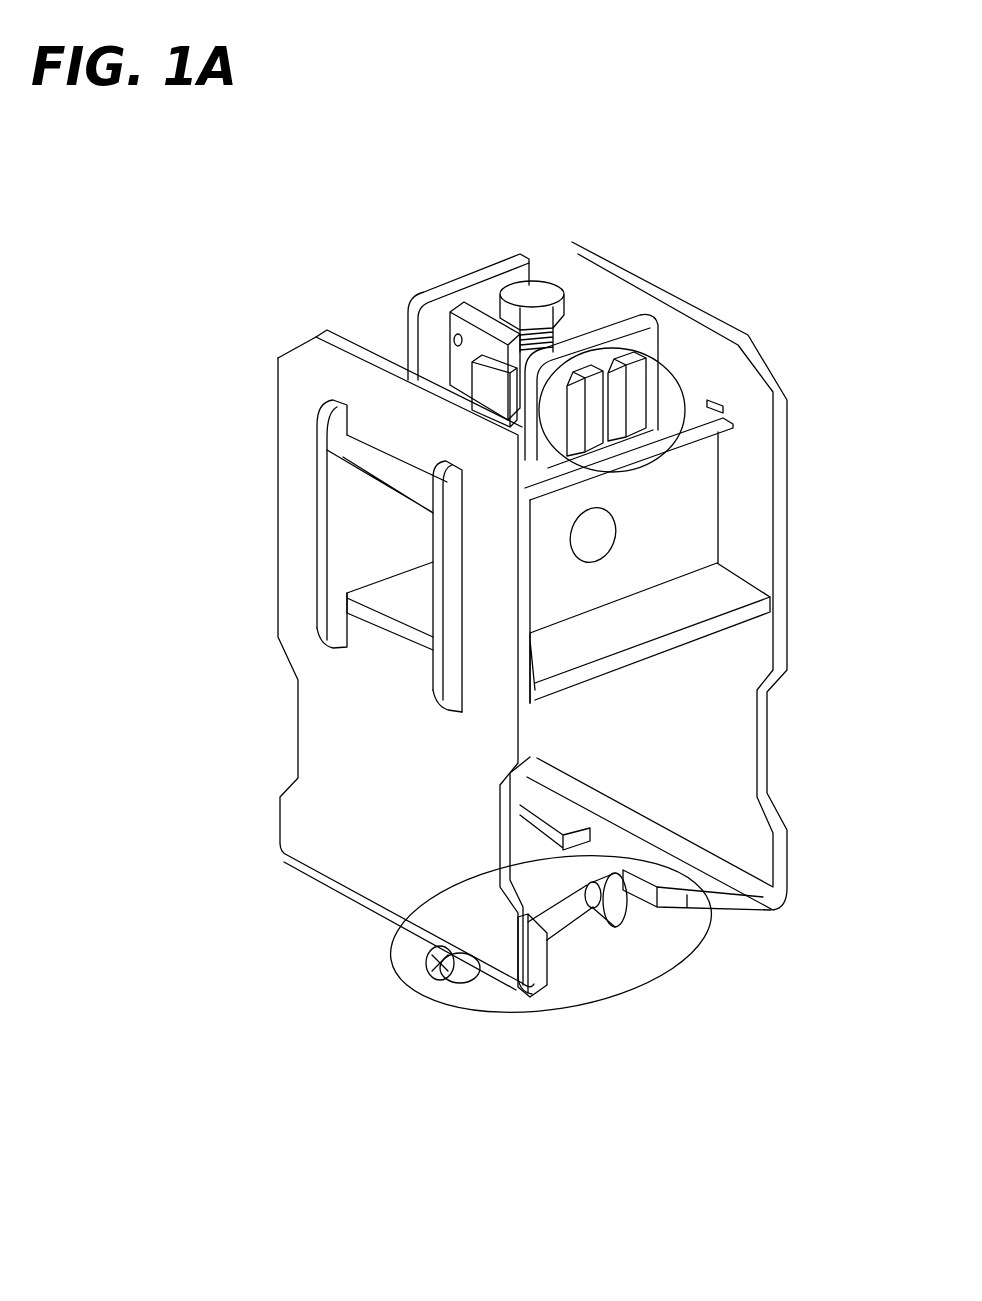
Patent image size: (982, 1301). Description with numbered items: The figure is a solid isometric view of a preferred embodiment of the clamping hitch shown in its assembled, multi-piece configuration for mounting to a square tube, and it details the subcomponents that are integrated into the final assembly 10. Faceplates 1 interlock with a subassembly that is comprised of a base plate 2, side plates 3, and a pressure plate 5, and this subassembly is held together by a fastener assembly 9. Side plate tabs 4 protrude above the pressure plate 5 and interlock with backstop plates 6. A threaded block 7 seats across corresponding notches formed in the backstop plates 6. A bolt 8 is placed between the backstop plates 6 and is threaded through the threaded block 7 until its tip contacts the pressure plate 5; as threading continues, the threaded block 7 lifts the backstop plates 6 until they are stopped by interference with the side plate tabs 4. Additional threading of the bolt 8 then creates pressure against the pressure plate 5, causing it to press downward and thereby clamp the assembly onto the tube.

The final assembly 10 is at (268, 160).
The faceplates 1 is at (312, 382).
The base plate 2 is at (730, 602).
The side plates 3 is at (350, 543).
The side plate tabs 4 is at (427, 316).
The pressure plate 5 is at (698, 415).
The backstop plates 6 is at (683, 380).
The threaded block 7 is at (480, 393).
The bolt 8 is at (545, 293).
The fastener assembly 9 is at (615, 990).